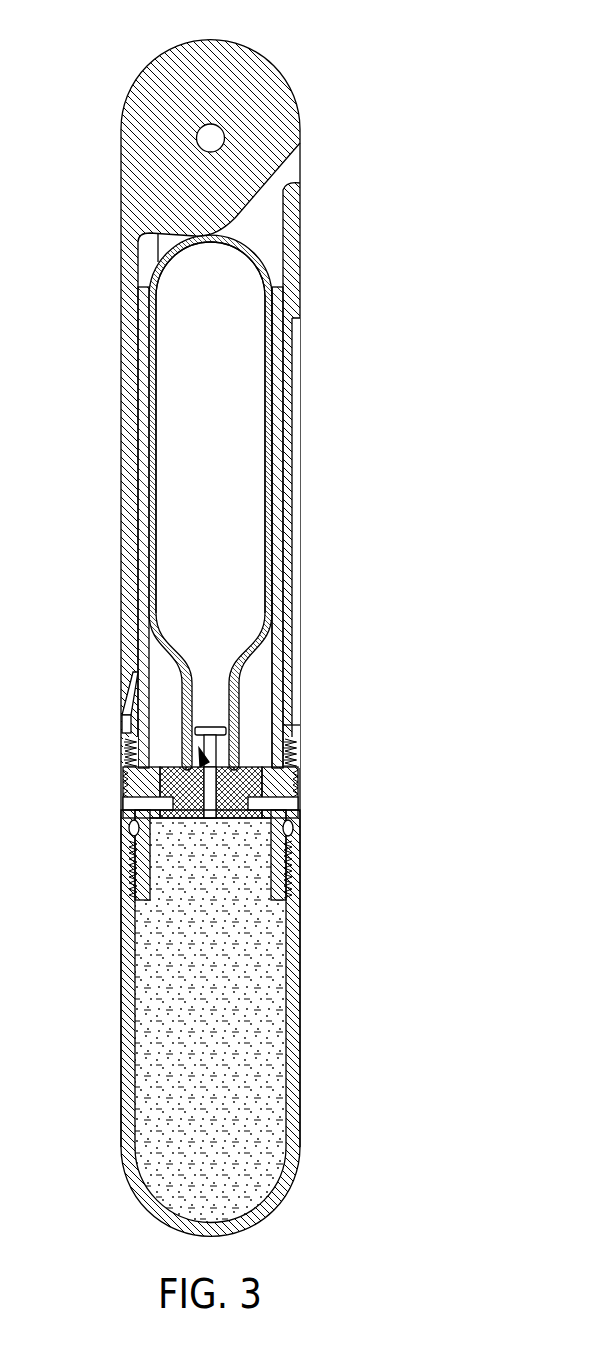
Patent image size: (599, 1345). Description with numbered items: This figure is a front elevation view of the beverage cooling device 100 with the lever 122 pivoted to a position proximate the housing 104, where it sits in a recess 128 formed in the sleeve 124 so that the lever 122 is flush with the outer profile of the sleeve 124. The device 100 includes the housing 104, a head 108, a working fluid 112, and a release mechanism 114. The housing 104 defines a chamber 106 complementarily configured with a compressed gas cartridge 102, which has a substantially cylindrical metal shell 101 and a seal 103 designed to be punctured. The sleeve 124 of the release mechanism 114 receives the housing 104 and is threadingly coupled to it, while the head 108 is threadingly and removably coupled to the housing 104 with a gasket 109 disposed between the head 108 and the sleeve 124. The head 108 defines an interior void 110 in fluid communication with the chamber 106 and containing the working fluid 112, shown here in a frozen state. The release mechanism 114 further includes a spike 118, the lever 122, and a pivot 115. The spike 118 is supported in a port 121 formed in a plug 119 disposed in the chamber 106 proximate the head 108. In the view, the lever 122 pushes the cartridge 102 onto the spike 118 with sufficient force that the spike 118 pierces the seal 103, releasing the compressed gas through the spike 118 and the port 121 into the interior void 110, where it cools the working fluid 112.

The device 100 is at (233, 621).
The metal shell 101 is at (266, 326).
The compressed gas cartridge 102 is at (263, 262).
The seal 103 is at (227, 728).
The housing 104 is at (275, 304).
The chamber 106 is at (266, 680).
The head 108 is at (292, 968).
The gasket 109 is at (292, 830).
The interior void 110 is at (278, 922).
The working fluid 112 is at (165, 948).
The release mechanism 114 is at (99, 141).
The pivot 115 is at (213, 134).
The spike 118 is at (200, 754).
The plug 119 is at (240, 793).
The port 121 is at (207, 800).
The lever 122 is at (131, 208).
The sleeve 124 is at (290, 207).
The recess 128 is at (128, 690).